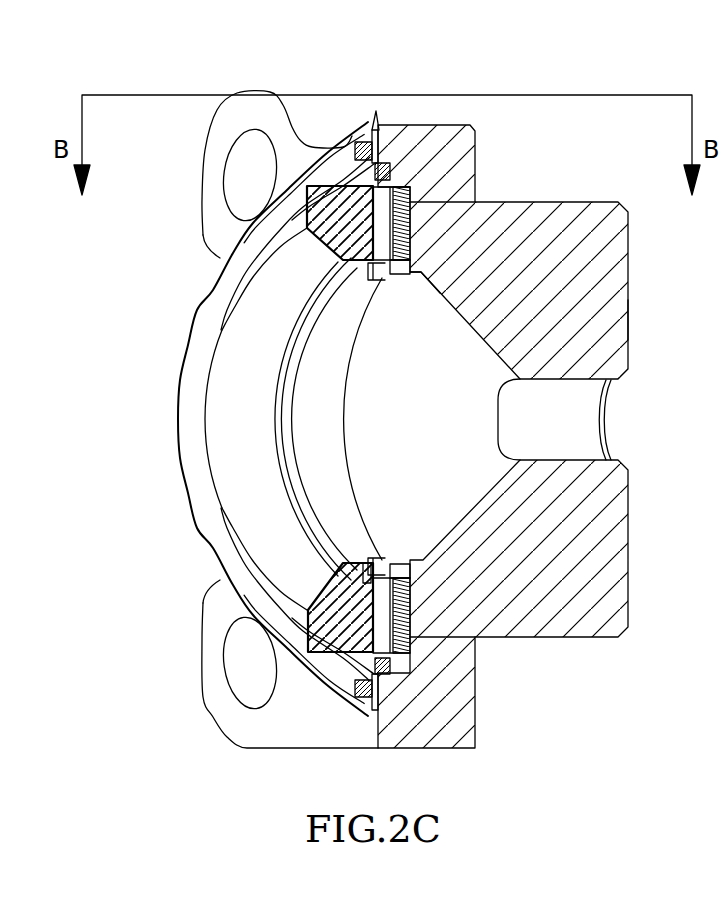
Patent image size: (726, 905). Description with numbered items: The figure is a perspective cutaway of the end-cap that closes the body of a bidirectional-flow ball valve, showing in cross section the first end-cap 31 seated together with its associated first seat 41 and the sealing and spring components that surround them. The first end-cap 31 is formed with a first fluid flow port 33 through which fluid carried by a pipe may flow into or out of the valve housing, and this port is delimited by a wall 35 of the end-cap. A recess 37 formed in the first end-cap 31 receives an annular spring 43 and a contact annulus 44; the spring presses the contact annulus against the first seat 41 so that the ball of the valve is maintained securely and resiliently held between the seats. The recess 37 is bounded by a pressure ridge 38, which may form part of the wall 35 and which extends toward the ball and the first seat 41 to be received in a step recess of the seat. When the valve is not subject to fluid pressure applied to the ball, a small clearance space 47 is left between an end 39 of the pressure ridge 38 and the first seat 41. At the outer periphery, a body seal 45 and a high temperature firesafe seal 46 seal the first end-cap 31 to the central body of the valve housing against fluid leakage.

The first end-cap 31 is at (541, 264).
The first fluid flow port 33 is at (562, 417).
The wall 35 is at (490, 347).
The recess 37 is at (400, 265).
The pressure ridge 38 is at (393, 285).
The end of pressure ridge 39 is at (378, 298).
The first seat 41 is at (253, 469).
The annular spring 43 is at (407, 223).
The contact annulus 44 is at (390, 163).
The body seal 45 is at (380, 200).
The high temperature firesafe seal 46 is at (362, 143).
The clearance space 47 is at (368, 264).